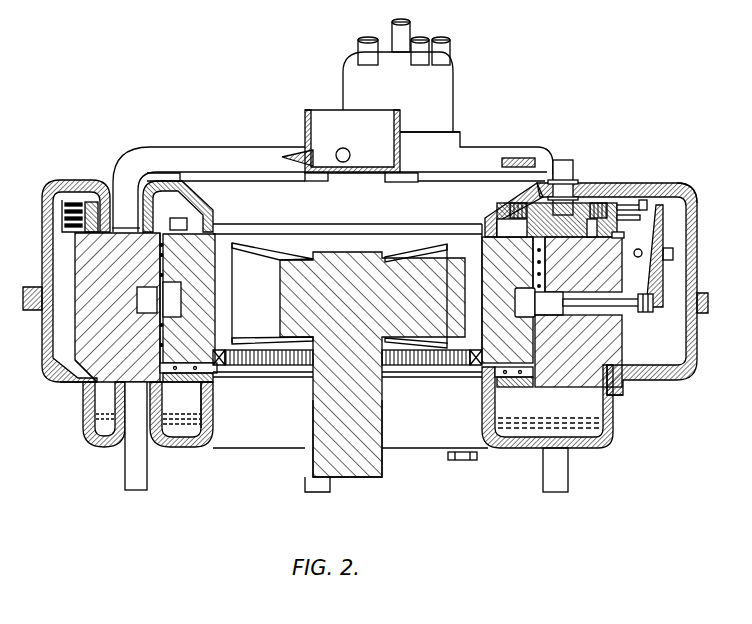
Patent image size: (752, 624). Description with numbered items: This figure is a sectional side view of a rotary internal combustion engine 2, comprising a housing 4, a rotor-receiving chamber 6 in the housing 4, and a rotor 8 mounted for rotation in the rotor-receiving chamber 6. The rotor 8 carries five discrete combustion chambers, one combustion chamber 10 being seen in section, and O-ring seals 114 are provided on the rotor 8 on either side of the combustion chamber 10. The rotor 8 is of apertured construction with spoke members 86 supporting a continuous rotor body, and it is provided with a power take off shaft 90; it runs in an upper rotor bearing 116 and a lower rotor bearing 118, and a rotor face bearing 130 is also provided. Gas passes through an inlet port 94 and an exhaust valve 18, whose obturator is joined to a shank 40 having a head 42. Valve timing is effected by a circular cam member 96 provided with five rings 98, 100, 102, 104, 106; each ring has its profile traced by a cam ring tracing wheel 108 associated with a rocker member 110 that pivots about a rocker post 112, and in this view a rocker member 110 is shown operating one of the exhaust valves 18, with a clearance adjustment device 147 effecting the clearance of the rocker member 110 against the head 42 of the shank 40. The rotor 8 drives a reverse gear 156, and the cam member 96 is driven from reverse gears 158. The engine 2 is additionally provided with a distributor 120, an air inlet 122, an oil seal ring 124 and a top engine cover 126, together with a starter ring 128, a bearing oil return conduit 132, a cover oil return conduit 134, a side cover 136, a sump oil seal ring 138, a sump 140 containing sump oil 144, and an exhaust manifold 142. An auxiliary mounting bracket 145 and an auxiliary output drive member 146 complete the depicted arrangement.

The rotary internal combustion engine 2 is at (475, 126).
The housing 4 is at (114, 319).
The rotor-receiving chamber 6 is at (381, 238).
The rotor 8 is at (350, 280).
The combustion chamber 10 is at (62, 202).
The exhaust valve 18 is at (552, 310).
The shank 40 is at (572, 304).
The head 42 is at (640, 312).
The spoke members 86 is at (267, 332).
The power take off shaft 90 is at (360, 427).
The inlet port 94 is at (150, 303).
The circular cam member 96 is at (66, 236).
The cam ring 98 is at (627, 208).
The cam ring 100 is at (633, 205).
The cam ring 102 is at (668, 187).
The cam ring 104 is at (623, 231).
The cam ring 106 is at (625, 254).
The cam ring tracing wheel 108 is at (645, 200).
The rocker member 110 is at (690, 195).
The rocker post 112 is at (673, 262).
The O-ring seals 114 is at (163, 278).
The upper rotor bearing 116 is at (163, 253).
The lower rotor bearing 118 is at (168, 348).
The distributor 120 is at (392, 28).
The air inlet 122 is at (328, 118).
The oil seal ring 124 is at (300, 231).
The top engine cover 126 is at (223, 200).
The starter ring 128 is at (263, 360).
The rotor face bearing 130 is at (212, 408).
The bearing oil return conduit 132 is at (174, 442).
The cover oil return conduit 134 is at (82, 362).
The side cover 136 is at (48, 364).
The sump oil seal ring 138 is at (222, 372).
The sump 140 is at (88, 444).
The exhaust manifold 142 is at (133, 478).
The sump oil 144 is at (187, 428).
The auxiliary mounting bracket 145 is at (500, 162).
The auxiliary output drive member 146 is at (553, 167).
The clearance adjustment device 147 is at (643, 362).
The reverse gear 156 is at (580, 223).
The reverse gears 158 is at (595, 210).